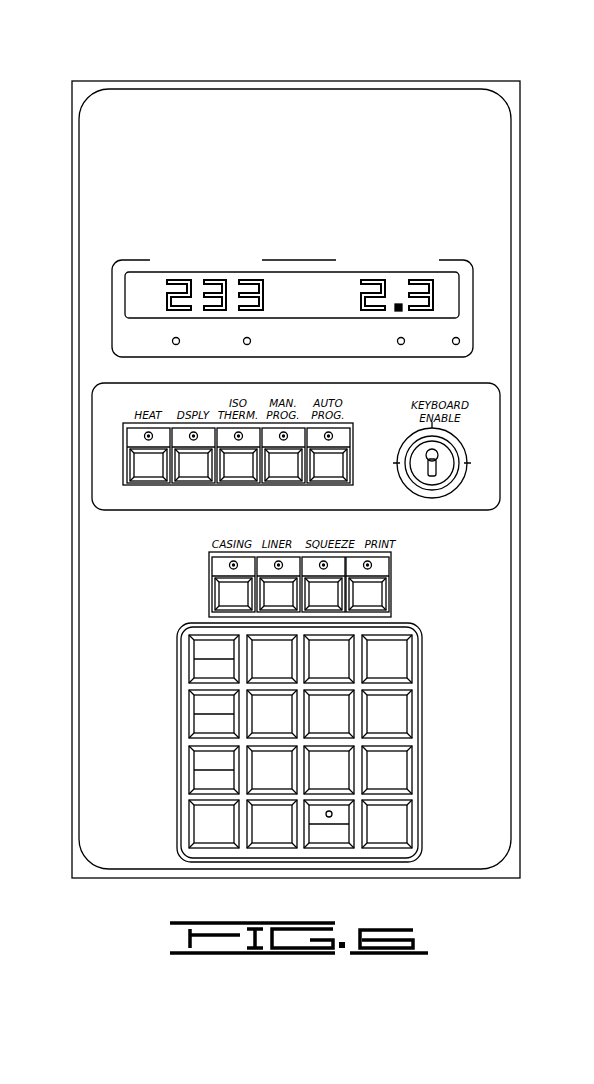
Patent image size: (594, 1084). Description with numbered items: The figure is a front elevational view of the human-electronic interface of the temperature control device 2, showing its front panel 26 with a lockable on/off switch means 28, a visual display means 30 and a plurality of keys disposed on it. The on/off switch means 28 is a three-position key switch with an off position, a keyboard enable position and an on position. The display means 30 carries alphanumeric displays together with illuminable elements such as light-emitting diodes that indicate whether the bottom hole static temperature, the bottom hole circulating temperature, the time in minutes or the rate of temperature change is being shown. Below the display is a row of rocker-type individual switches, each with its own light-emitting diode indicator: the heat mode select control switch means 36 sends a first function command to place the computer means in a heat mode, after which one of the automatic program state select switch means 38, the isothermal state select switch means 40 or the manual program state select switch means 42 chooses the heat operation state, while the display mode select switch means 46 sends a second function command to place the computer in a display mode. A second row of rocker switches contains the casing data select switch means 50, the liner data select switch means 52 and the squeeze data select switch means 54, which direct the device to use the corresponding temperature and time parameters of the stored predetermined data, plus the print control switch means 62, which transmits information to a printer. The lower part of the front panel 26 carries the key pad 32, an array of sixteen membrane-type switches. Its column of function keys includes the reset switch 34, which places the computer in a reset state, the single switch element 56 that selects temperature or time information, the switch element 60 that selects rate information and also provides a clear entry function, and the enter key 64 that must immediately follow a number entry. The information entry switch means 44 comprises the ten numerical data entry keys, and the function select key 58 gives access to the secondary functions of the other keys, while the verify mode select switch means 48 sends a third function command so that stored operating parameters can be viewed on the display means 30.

The temperature control device 2 is at (63, 483).
The front panel 26 is at (90, 808).
The lockable on/off switch means 28 is at (478, 456).
The visual display means 30 is at (483, 294).
The key pad 32 is at (163, 834).
The reset switch 34 is at (203, 673).
The heat mode select control switch means 36 is at (143, 470).
The automatic program state select switch means 38 is at (336, 473).
The isothermal state select switch means 40 is at (233, 470).
The manual program state select switch means 42 is at (287, 470).
The information entry switch means 44 is at (343, 767).
The display mode select switch means 46 is at (187, 470).
The verify mode select switch means 48 is at (337, 843).
The casing data select switch means 50 is at (225, 598).
The liner data select switch means 52 is at (270, 583).
The squeeze data select switch means 54 is at (330, 600).
The single switch element 56 is at (200, 713).
The function select key 58 is at (272, 843).
The switch element 60 is at (205, 772).
The print control switch means 62 is at (375, 600).
The enter key 64 is at (205, 813).